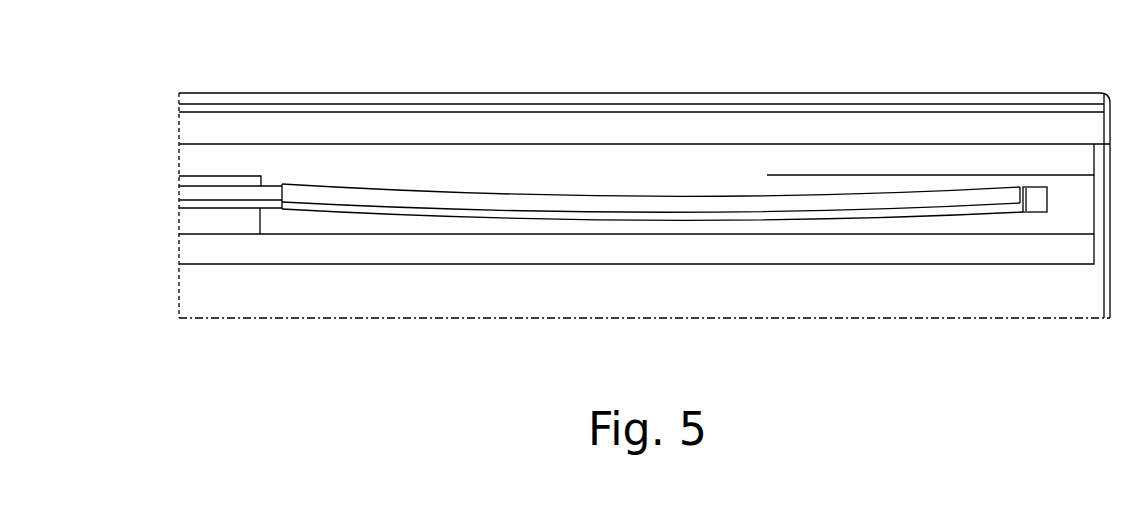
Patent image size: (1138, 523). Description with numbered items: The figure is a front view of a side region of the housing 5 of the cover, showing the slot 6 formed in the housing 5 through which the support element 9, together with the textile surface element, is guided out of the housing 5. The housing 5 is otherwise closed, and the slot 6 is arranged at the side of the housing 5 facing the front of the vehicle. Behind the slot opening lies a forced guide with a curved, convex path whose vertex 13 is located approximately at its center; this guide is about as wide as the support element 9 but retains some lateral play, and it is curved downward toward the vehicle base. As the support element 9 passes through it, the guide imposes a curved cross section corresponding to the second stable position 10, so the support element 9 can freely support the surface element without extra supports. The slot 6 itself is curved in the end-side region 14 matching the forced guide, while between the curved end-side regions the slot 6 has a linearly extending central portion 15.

The housing 5 is at (560, 91).
The slot 6 is at (267, 195).
The support element 9 is at (410, 199).
The second stable position 10 is at (493, 221).
The vertex 13 is at (765, 232).
The end-side region 14 is at (995, 224).
The central portion 15 is at (212, 203).